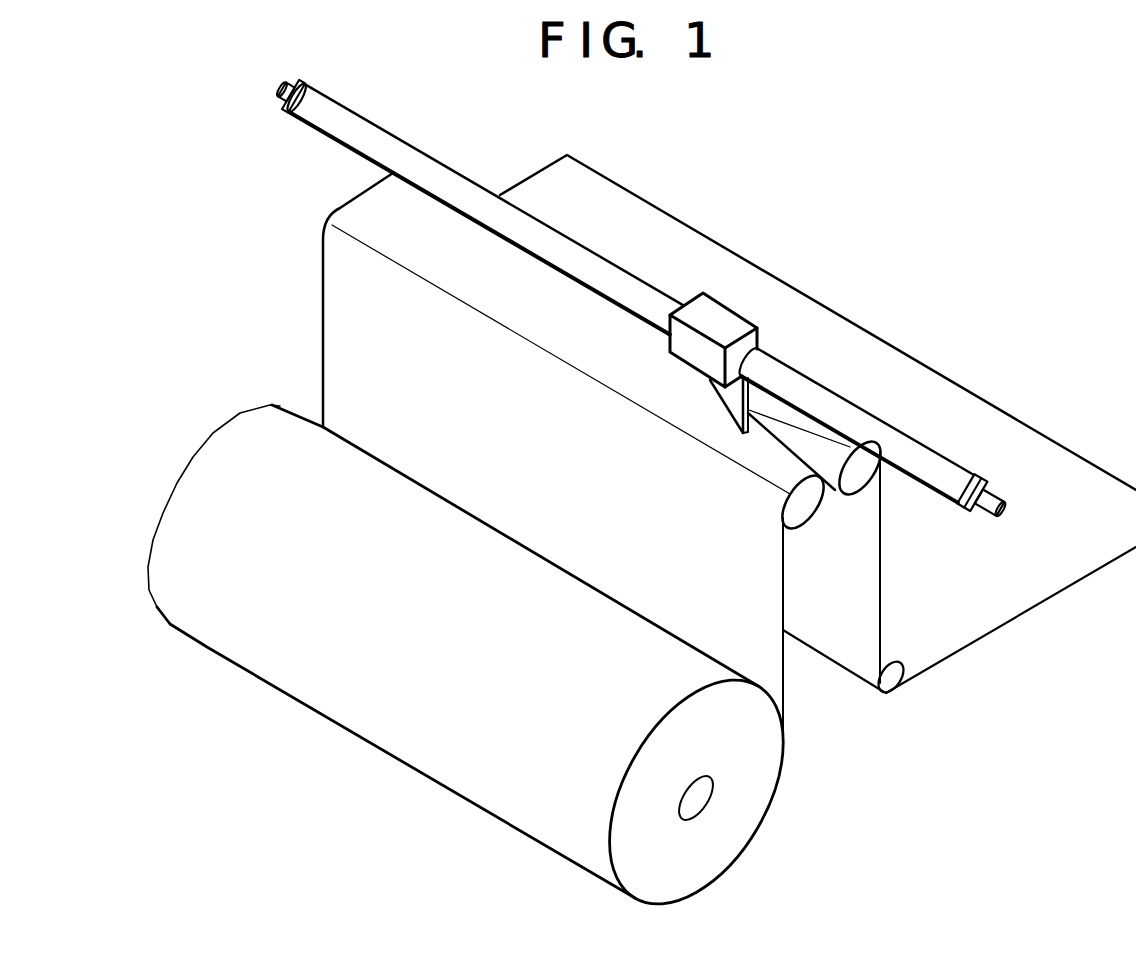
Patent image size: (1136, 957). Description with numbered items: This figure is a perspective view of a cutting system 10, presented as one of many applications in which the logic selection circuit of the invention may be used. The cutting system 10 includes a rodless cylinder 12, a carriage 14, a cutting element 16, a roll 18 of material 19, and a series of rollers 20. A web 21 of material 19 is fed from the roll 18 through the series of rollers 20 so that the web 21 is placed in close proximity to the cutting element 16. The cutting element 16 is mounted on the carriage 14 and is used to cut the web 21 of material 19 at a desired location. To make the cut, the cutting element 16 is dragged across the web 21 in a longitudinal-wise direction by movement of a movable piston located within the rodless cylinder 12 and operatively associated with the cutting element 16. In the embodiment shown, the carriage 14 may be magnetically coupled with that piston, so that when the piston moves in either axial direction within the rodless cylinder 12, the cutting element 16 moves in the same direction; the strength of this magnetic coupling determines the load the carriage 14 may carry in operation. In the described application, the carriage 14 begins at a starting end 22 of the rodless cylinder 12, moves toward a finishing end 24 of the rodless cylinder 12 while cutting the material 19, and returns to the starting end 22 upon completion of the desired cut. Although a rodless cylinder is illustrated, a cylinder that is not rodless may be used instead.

The cutting system 10 is at (744, 188).
The rodless cylinder 12 is at (345, 120).
The carriage 14 is at (733, 325).
The cutting element 16 is at (737, 399).
The roll 18 is at (330, 692).
The material 19 is at (1063, 467).
The series of rollers 20 is at (855, 485).
The web 21 is at (340, 300).
The starting end 22 is at (943, 514).
The finishing end 24 is at (301, 141).